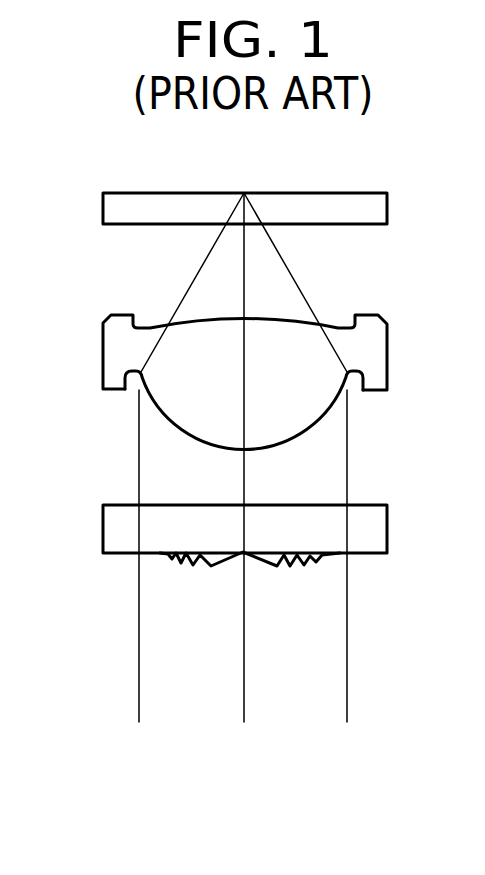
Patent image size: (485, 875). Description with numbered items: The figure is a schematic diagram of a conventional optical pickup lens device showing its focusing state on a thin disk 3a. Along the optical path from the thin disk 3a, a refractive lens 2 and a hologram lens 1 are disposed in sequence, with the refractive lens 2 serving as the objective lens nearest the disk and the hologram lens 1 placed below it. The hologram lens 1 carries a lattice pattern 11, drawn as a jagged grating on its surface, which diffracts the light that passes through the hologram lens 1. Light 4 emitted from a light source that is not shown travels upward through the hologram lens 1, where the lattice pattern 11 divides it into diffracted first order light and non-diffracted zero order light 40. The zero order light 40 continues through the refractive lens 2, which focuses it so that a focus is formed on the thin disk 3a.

The thin disk 3a is at (117, 207).
The refractive lens 2 is at (110, 358).
The zero order light 40 is at (140, 474).
The hologram lens 1 is at (115, 533).
The lattice pattern 11 is at (330, 578).
The light 4 is at (348, 745).